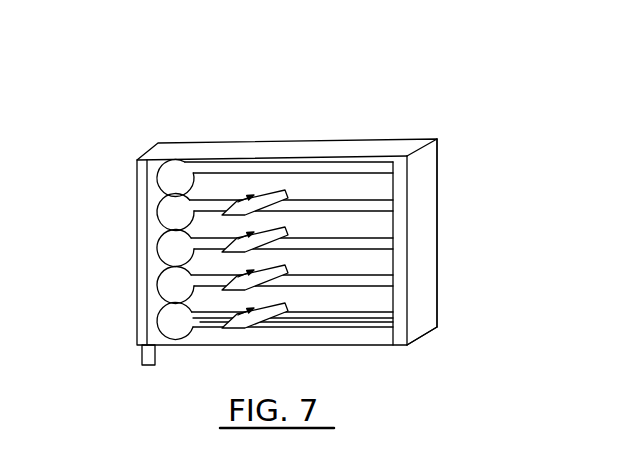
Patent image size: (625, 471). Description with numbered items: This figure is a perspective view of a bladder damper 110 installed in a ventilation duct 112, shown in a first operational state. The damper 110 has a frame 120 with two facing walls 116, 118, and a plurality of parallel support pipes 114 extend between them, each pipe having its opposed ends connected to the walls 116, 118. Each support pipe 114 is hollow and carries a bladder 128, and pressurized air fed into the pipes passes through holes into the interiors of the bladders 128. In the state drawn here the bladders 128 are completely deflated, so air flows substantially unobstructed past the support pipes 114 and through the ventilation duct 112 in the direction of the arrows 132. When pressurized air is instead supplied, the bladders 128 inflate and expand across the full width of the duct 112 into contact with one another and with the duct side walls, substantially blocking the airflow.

The bladder damper 110 is at (260, 226).
The ventilation duct 112 is at (483, 233).
The support pipes 114 is at (330, 168).
The wall 116 is at (108, 262).
The wall 118 is at (460, 253).
The frame 120 is at (469, 332).
The bladders 128 is at (292, 249).
The arrows 132 is at (262, 189).